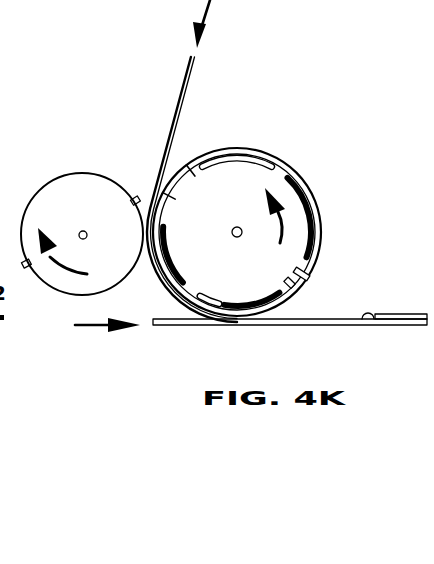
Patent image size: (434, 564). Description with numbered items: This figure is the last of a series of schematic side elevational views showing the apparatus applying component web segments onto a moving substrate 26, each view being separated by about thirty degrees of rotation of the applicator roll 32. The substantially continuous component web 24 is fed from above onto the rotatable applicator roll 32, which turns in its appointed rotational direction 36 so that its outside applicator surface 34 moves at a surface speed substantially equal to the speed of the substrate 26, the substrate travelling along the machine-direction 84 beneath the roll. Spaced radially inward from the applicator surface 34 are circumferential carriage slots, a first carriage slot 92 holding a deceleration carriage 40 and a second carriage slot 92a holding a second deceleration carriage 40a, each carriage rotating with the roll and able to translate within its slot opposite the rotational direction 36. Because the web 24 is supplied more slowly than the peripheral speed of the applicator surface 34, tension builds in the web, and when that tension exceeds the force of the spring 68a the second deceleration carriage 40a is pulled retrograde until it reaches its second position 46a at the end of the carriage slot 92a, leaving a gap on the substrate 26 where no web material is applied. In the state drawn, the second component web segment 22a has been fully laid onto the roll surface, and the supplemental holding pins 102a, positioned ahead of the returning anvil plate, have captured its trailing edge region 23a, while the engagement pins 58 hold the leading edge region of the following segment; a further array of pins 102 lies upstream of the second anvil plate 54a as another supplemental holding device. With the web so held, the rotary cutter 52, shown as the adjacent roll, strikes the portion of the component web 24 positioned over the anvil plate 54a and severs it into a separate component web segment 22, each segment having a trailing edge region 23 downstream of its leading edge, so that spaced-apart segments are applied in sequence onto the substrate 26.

The component web segment 22 is at (421, 313).
The second component web segment 22a is at (162, 284).
The trailing edge region 23 is at (368, 323).
The trailing edge region of second web segment 23a is at (148, 214).
The component web 24 is at (186, 78).
The moving substrate 26 is at (163, 326).
The applicator roll 32 is at (309, 187).
The applicator surface 34 is at (285, 153).
The rotational direction 36 is at (258, 222).
The deceleration carriage 40 is at (189, 171).
The second deceleration carriage 40a is at (224, 300).
The second position of second carriage 46a is at (204, 292).
The rotary cutter 52 is at (50, 181).
The second anvil plate 54a is at (319, 271).
The engagement pins 58 is at (181, 150).
The spring 68a is at (309, 279).
The machine-direction 84 is at (93, 329).
The carriage slot 92 is at (244, 158).
The second carriage slot 92a is at (264, 325).
The second array of pins 102 is at (320, 263).
The supplemental holding pins 102a is at (146, 196).